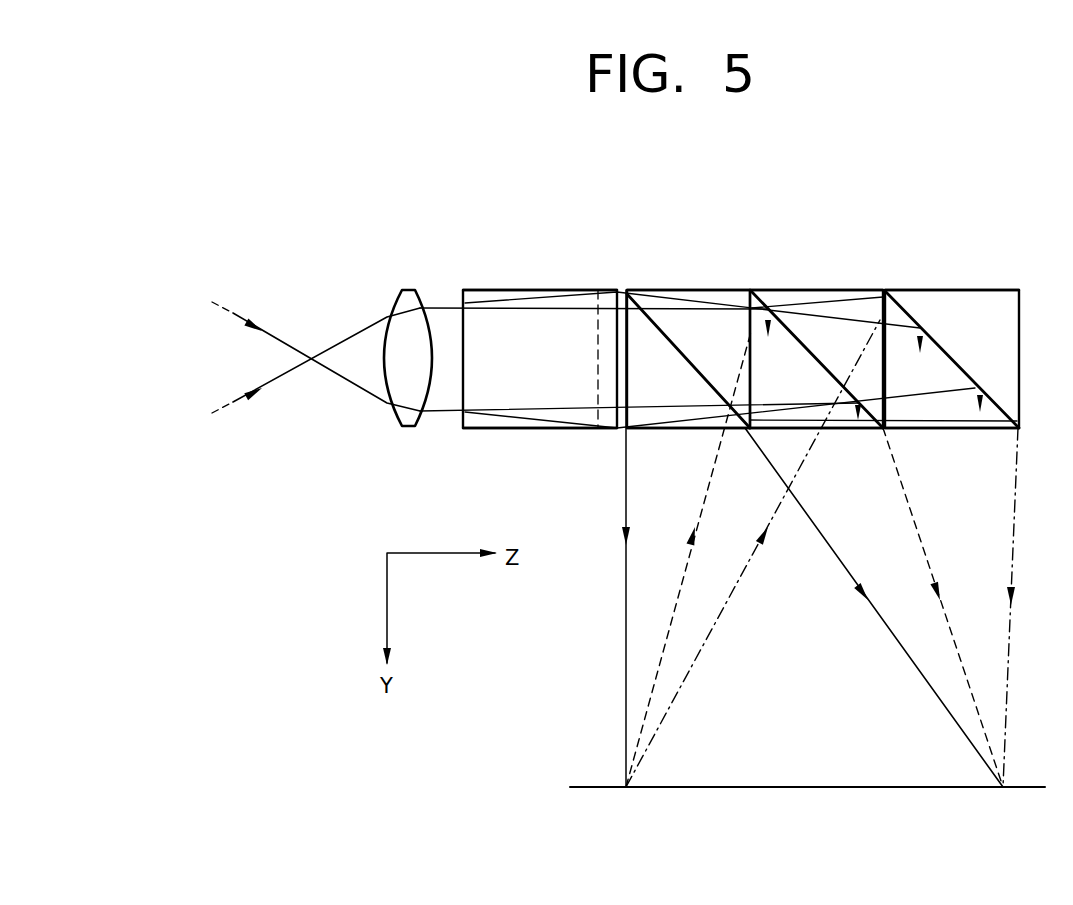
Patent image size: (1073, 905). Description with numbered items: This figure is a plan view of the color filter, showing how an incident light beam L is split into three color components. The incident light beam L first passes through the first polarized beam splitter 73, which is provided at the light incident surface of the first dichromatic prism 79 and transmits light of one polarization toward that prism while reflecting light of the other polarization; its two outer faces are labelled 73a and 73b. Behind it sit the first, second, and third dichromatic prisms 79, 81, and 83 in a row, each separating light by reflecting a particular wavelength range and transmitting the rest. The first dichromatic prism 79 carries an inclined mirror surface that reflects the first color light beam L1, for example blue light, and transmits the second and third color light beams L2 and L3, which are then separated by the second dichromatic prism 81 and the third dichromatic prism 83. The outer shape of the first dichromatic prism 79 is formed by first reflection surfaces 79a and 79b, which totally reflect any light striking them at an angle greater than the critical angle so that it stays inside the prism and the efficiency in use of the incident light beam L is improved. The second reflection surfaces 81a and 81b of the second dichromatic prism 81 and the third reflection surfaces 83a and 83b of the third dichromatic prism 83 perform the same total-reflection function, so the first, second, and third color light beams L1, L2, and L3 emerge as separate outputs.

The first polarized beam splitter 73 is at (558, 289).
The incident surface of block 73 73a is at (495, 291).
The opposite surface of block 73 73b is at (495, 427).
The first dichromatic prism 79 is at (719, 289).
The first reflection surface 79a is at (670, 291).
The first reflection surface 79b is at (672, 427).
The second dichromatic prism 81 is at (863, 289).
The second reflection surface 81a is at (816, 291).
The second reflection surface 81b is at (825, 427).
The third dichromatic prism 83 is at (940, 289).
The third reflection surface 83a is at (989, 291).
The third reflection surface 83b is at (973, 427).
The incident light beam L is at (362, 395).
The first color light beam L1 is at (624, 627).
The second color light beam L2 is at (677, 602).
The third color light beam L3 is at (718, 614).